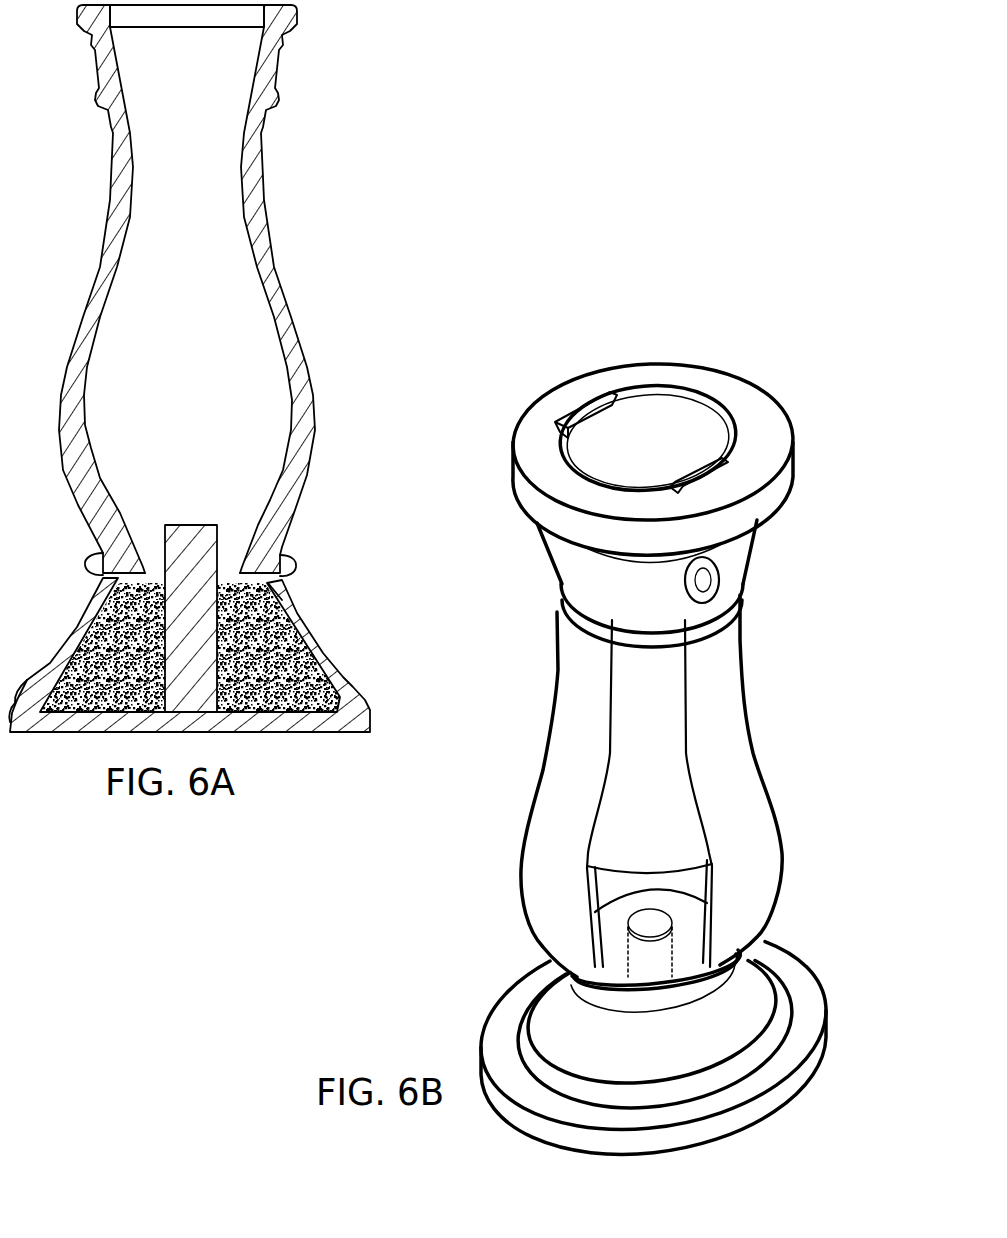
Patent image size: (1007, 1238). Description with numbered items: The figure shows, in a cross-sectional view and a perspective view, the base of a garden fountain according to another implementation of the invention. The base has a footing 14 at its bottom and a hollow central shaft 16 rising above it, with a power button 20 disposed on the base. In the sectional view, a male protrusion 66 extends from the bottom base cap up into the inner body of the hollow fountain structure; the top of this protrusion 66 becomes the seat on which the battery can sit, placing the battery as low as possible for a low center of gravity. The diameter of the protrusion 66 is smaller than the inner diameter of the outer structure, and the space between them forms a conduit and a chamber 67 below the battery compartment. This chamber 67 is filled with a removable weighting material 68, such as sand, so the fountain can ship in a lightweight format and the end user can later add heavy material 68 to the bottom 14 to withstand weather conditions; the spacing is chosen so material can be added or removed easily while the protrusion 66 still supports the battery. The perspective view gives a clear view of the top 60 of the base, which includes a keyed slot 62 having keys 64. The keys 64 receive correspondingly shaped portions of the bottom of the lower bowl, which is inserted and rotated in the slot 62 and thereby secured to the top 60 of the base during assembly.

In FIG. 6A, the footing 14 is at (333, 670).
In FIG. 6B, the footing 14 is at (545, 1016).
In FIG. 6A, the central shaft 16 is at (277, 279).
In FIG. 6B, the central shaft 16 is at (740, 757).
In FIG. 6B, the power button 20 is at (708, 578).
In FIG. 6B, the top of the base 60 is at (672, 411).
In FIG. 6B, the keyed slot 62 is at (613, 398).
In FIG. 6B, the keys 64 is at (590, 403).
In FIG. 6A, the male protrusion 66 is at (218, 538).
In FIG. 6B, the male protrusion 66 is at (643, 923).
In FIG. 6A, the chamber 67 is at (287, 607).
In FIG. 6A, the weighting material 68 is at (283, 633).